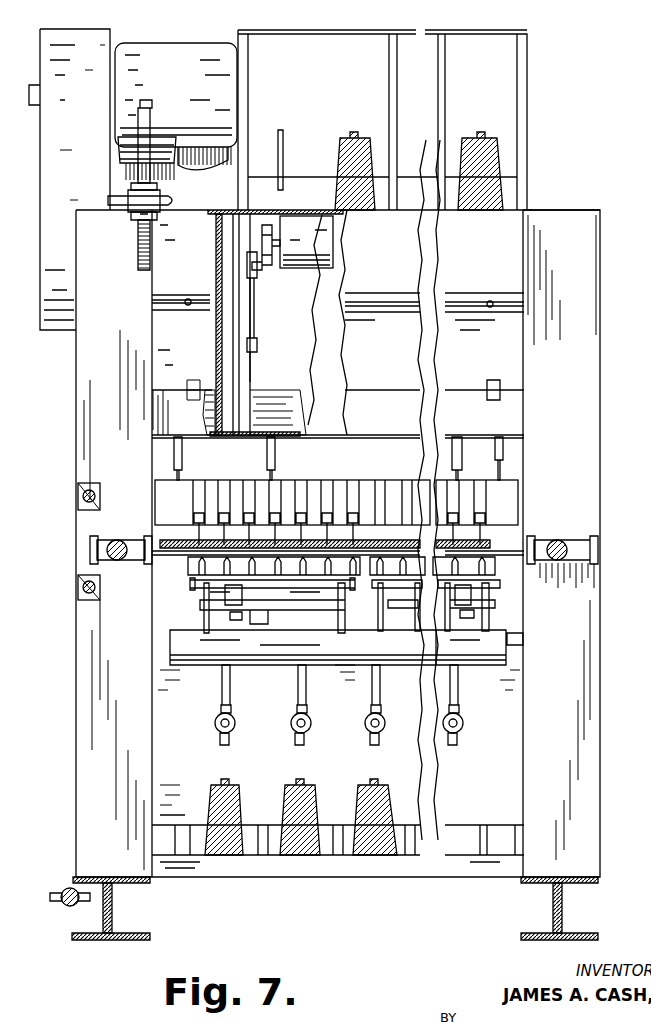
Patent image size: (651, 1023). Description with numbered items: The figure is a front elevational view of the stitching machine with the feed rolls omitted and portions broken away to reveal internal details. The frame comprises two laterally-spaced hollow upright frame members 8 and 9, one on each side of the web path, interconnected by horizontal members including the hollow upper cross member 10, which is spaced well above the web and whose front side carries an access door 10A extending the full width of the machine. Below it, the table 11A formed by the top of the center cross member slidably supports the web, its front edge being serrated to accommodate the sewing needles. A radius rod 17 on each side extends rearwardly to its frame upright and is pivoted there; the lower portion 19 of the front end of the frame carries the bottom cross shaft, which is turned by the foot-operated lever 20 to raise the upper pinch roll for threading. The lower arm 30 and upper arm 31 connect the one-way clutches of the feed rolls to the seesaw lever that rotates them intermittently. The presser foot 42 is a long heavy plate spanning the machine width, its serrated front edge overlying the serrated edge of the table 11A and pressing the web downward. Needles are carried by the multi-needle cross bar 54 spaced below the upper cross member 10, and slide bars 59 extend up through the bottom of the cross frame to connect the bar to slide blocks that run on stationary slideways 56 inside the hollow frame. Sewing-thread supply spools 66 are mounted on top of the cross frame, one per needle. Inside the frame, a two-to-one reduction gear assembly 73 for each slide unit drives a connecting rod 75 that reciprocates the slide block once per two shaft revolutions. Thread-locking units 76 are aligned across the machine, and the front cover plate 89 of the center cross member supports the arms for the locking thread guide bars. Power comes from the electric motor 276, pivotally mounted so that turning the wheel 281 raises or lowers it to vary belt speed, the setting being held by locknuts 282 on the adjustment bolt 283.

The upright frame member 8 is at (109, 442).
The upright frame member 9 is at (571, 359).
The upper cross member 10 is at (486, 254).
The access door 10A is at (474, 356).
The table 11A is at (503, 548).
The radius rod 17 is at (122, 540).
The lower portion of the front end of the frame 19 is at (112, 908).
The foot-operated lever 20 is at (64, 887).
The lower arm 30 is at (82, 602).
The upper arm 31 is at (82, 512).
The presser foot 42 is at (180, 535).
The multi-needle cross bar 54 is at (179, 505).
The slideways 56 is at (233, 312).
The slide bar 59 is at (221, 454).
The sewing-thread supply spool 66 is at (338, 142).
The reduction gear assembly 73 is at (314, 236).
The connecting rod 75 is at (256, 290).
The thread-locking mechanism unit 76 is at (280, 628).
The front cover plate 89 is at (505, 606).
The electric motor 276 is at (184, 92).
The wheel 281 is at (173, 201).
The locknut 282 is at (158, 186).
The adjustment bolt 283 is at (138, 238).